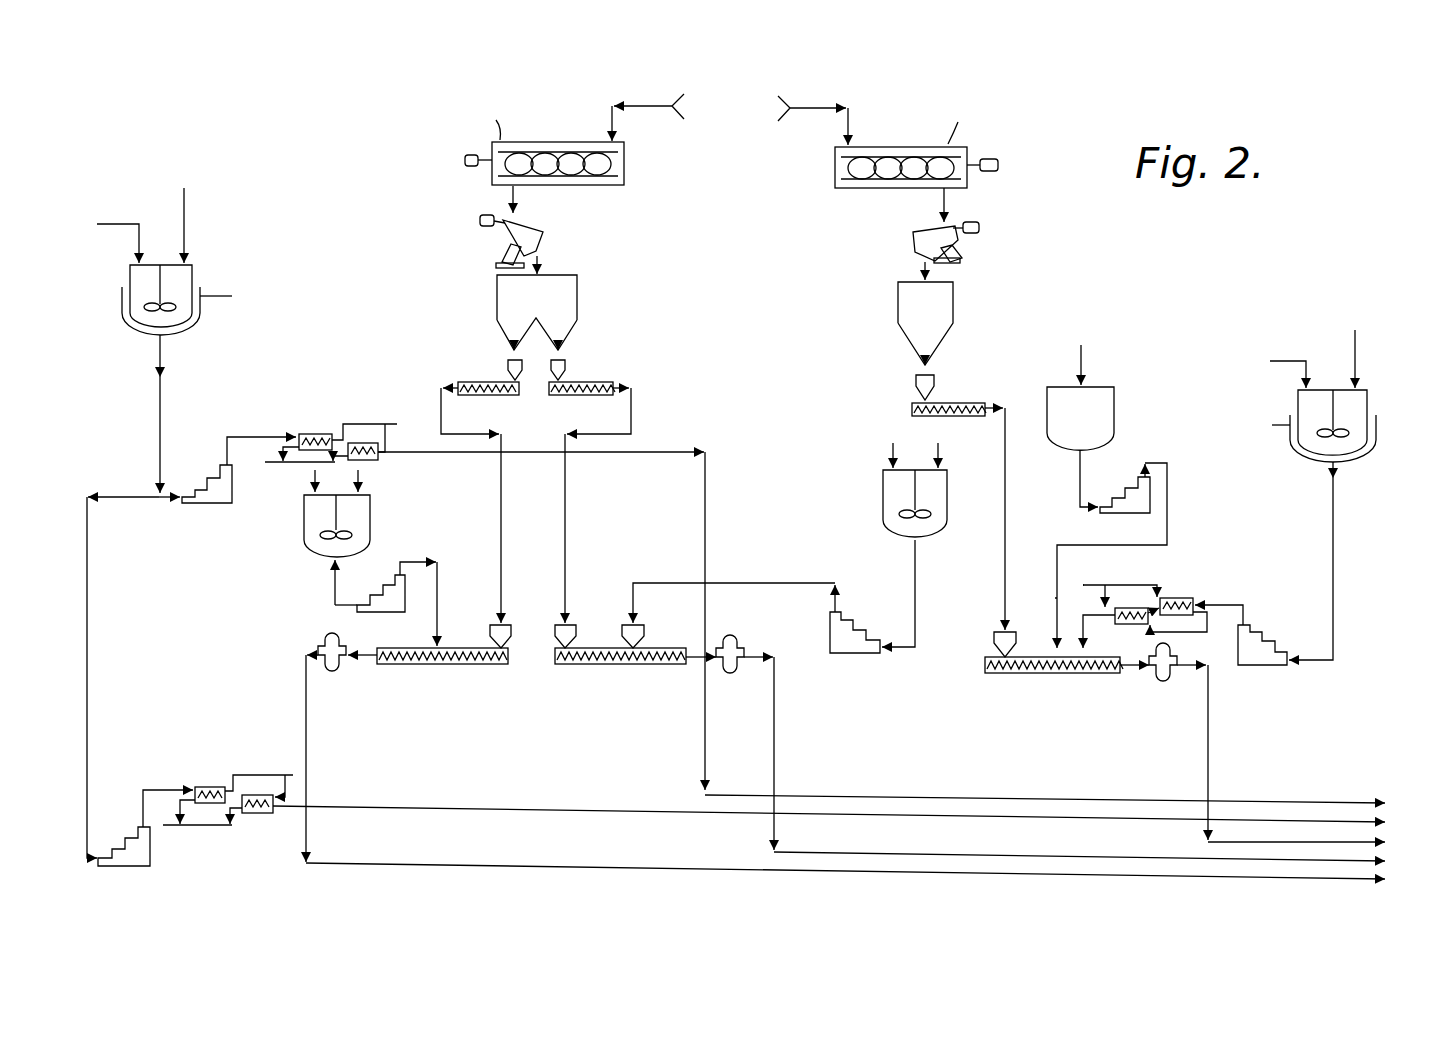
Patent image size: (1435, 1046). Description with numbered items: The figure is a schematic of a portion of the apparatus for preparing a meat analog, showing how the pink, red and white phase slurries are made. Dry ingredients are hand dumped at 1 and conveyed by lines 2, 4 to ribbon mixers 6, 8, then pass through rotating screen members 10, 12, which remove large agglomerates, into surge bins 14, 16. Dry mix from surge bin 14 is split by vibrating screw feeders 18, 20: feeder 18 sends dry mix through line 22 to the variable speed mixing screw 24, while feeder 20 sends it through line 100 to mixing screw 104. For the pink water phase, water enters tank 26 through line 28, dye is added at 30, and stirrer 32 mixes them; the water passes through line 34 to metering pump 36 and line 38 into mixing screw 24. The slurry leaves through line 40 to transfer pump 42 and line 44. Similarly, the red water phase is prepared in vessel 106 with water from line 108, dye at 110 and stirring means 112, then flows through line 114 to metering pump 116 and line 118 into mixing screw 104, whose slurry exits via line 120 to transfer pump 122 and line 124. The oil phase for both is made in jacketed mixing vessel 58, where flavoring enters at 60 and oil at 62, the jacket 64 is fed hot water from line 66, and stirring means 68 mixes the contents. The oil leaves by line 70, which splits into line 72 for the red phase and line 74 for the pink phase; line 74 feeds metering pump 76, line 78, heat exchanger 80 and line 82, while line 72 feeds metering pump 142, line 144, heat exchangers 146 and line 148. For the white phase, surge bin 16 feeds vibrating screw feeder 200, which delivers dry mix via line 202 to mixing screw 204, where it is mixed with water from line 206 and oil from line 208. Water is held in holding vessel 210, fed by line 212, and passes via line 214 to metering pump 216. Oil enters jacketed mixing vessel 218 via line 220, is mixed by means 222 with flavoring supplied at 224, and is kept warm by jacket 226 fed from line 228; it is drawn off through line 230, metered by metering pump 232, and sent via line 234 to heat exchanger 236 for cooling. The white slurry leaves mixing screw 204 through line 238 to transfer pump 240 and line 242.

The hand dump 1 is at (731, 95).
The line 2 is at (607, 114).
The line 4 is at (850, 114).
The ribbon mixer 6 is at (554, 141).
The ribbon mixer 8 is at (903, 146).
The rotating screen member 10 is at (538, 227).
The rotating screen member 12 is at (915, 232).
The surge bin 14 is at (578, 312).
The surge bin 16 is at (897, 318).
The vibrating screw feeder 18 is at (470, 382).
The vibrating screw feeder 20 is at (581, 395).
The line 22 is at (496, 494).
The variable speed mixing screw 24 is at (440, 646).
The tank 26 is at (372, 509).
The line 28 is at (312, 479).
The dye addition point 30 is at (362, 484).
The stirrer 32 is at (326, 510).
The line 34 is at (332, 579).
The metering pump 36 is at (378, 614).
The line 38 is at (439, 594).
The line 40 is at (374, 659).
The transfer pump 42 is at (319, 640).
The line 44 is at (304, 683).
The jacketed mixing vessel 58 is at (194, 282).
The flavoring inlet 60 is at (117, 232).
The oil inlet 62 is at (189, 207).
The jacket 64 is at (194, 335).
The line 66 is at (235, 296).
The stirring means 68 is at (142, 298).
The line 70 is at (158, 421).
The line 72 is at (166, 492).
The line 74 is at (120, 502).
The metering pump 76 is at (152, 857).
The line 78 is at (154, 780).
The heat exchanger 80 is at (262, 771).
The line 82 is at (500, 815).
The line 100 is at (631, 406).
The mixing screw 104 is at (596, 647).
The vessel 106 is at (880, 518).
The line 108 is at (943, 454).
The dye addition point 110 is at (888, 446).
The stirring means 112 is at (947, 514).
The line 114 is at (918, 588).
The metering pump 116 is at (843, 622).
The line 118 is at (756, 583).
The line 120 is at (692, 666).
The transfer pump 122 is at (731, 680).
The line 124 is at (776, 769).
The metering pump 142 is at (231, 485).
The line 144 is at (234, 435).
The heat exchangers 146 is at (396, 421).
The line 148 is at (437, 454).
The vibrating screw feeder 200 is at (975, 402).
The line 202 is at (1010, 485).
The variable speed mixing screw 204 is at (983, 670).
The line 206 is at (1055, 599).
The line 208 is at (1086, 635).
The holding vessel 210 is at (1110, 384).
The line 212 is at (1085, 350).
The line 214 is at (1082, 490).
The metering pump 216 is at (1145, 505).
The jacketed mixing vessel 218 is at (1368, 394).
The line 220 is at (1358, 344).
The mixing means 222 is at (1329, 400).
The flavoring supply point 224 is at (1280, 360).
The jacket 226 is at (1334, 462).
The line 228 is at (1268, 422).
The line 230 is at (1335, 587).
The metering pump 232 is at (1262, 630).
The line 234 is at (1235, 605).
The heat exchanger 236 is at (1123, 580).
The line 238 is at (1125, 675).
The transfer pump 240 is at (1180, 658).
The line 242 is at (1210, 757).